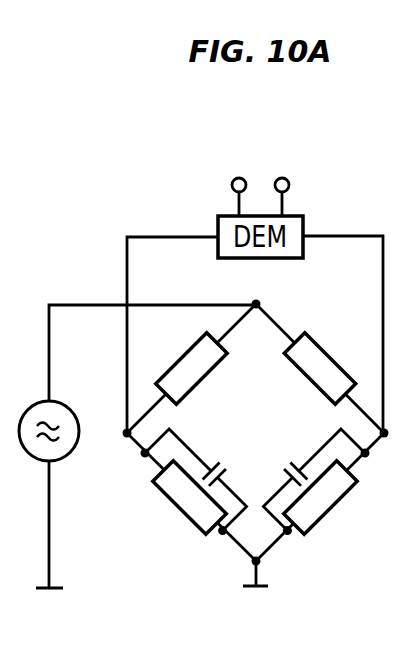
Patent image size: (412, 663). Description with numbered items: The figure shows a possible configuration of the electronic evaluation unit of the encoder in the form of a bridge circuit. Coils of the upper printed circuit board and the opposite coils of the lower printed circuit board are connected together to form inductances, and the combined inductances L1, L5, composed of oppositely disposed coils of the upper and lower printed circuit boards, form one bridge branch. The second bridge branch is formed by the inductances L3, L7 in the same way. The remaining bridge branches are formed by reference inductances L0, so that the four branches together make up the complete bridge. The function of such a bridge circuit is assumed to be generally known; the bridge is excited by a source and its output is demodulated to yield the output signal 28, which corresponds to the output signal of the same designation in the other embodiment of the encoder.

The output signal 28 is at (260, 183).
The reference inductance L0 is at (253, 361).
The inductance L1 is at (195, 498).
The inductance L5 is at (195, 498).
The inductance L3 is at (315, 498).
The inductance L7 is at (315, 498).